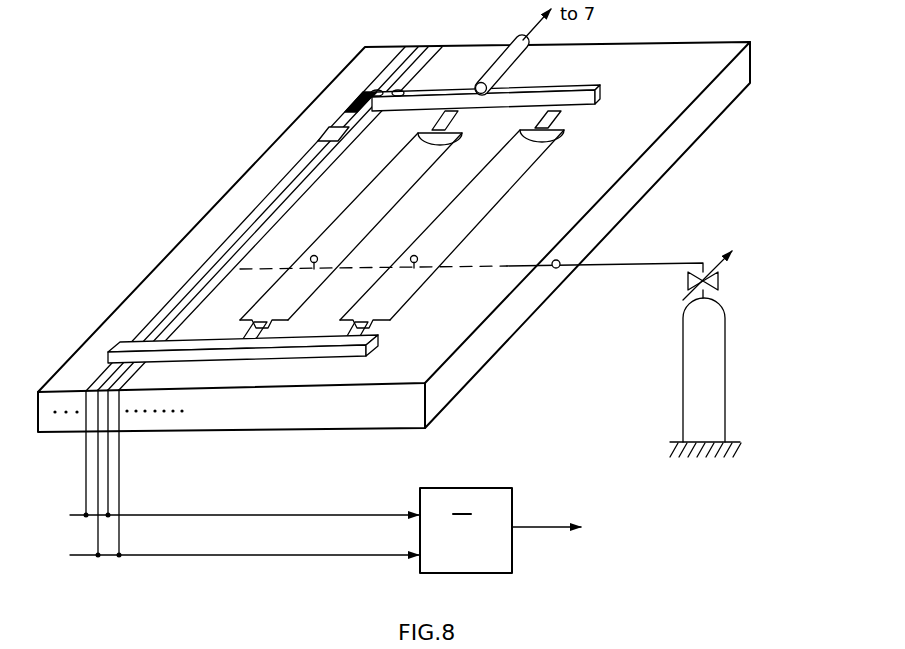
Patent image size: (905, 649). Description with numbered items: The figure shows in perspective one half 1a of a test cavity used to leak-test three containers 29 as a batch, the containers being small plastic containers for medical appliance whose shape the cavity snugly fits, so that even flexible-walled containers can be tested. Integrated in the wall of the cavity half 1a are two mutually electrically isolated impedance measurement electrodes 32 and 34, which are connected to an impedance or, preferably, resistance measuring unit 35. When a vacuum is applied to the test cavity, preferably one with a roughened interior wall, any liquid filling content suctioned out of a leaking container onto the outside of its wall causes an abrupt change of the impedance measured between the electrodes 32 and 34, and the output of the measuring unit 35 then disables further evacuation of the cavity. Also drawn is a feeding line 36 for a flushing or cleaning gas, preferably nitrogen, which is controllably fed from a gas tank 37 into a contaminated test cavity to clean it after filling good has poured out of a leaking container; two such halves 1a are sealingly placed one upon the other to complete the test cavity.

The test cavity half 1a is at (648, 172).
The containers 29 is at (473, 207).
The impedance measurement electrode 32 is at (82, 418).
The impedance measurement electrode 34 is at (117, 413).
The impedance measuring unit 35 is at (463, 487).
The gas supply line 36 is at (507, 267).
The gas tank 37 is at (707, 350).